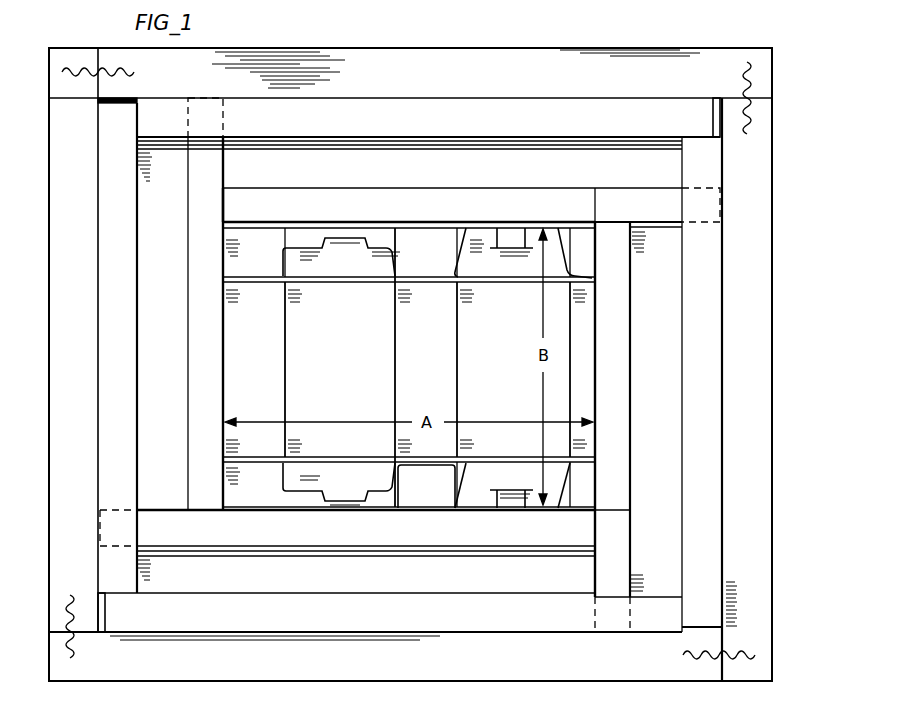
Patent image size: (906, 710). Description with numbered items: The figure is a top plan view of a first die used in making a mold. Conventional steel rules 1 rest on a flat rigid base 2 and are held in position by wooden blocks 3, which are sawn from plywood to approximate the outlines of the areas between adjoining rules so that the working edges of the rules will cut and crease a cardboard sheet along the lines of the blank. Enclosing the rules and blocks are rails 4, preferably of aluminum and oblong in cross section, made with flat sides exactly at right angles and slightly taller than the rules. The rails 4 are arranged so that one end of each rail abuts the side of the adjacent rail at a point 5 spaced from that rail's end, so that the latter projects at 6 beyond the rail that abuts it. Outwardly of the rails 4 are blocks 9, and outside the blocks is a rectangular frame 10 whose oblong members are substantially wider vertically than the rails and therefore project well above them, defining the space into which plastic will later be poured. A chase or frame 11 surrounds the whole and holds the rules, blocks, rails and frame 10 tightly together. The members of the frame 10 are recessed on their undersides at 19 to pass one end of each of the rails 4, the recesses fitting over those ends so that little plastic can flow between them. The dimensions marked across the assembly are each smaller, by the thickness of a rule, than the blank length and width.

The steel rule 1 is at (477, 284).
The flat rigid base 2 is at (82, 366).
The wooden block 3 is at (262, 253).
The rail 4 is at (202, 337).
The abutment point 5 is at (608, 222).
The projecting rail end 6 is at (214, 167).
The block 9 is at (484, 177).
The rectangular frame 10 is at (383, 127).
The chase 11 is at (425, 57).
The recess 19 is at (700, 188).